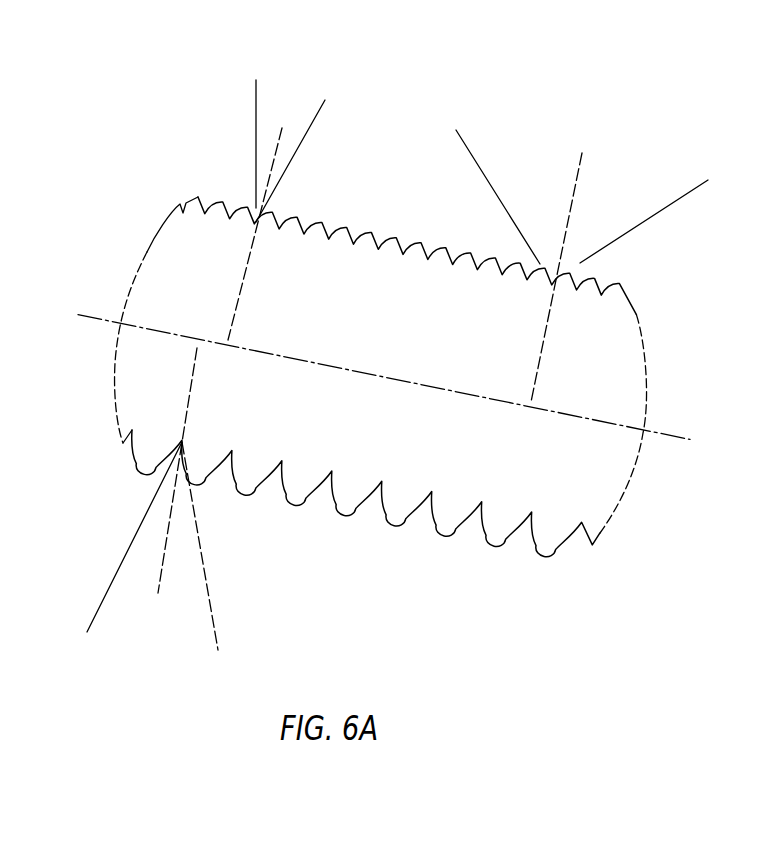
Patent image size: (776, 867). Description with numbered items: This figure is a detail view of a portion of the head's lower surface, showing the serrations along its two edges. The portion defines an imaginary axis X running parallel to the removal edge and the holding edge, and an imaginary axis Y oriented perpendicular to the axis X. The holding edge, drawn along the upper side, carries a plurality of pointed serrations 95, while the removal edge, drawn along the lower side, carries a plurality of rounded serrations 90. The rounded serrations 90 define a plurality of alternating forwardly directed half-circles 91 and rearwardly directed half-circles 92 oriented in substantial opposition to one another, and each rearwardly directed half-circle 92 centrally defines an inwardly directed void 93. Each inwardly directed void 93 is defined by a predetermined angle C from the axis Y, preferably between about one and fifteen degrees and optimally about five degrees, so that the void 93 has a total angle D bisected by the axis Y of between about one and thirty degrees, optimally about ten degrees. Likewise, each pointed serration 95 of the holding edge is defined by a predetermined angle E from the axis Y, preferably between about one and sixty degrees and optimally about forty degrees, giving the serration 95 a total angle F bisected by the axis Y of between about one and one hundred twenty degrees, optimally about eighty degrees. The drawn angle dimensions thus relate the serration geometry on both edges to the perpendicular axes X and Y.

The rounded serrations 90 is at (455, 521).
The forwardly directed half-circles 91 is at (546, 556).
The rearwardly directed half-circles 92 is at (536, 534).
The inwardly directed void 93 is at (577, 290).
The pointed serrations 95 is at (595, 277).
The predetermined angle C is at (277, 143).
The total angle D is at (217, 145).
The predetermined angle E is at (582, 177).
The total angle F is at (467, 147).
The imaginary axis X is at (670, 435).
The imaginary axis Y is at (237, 307).